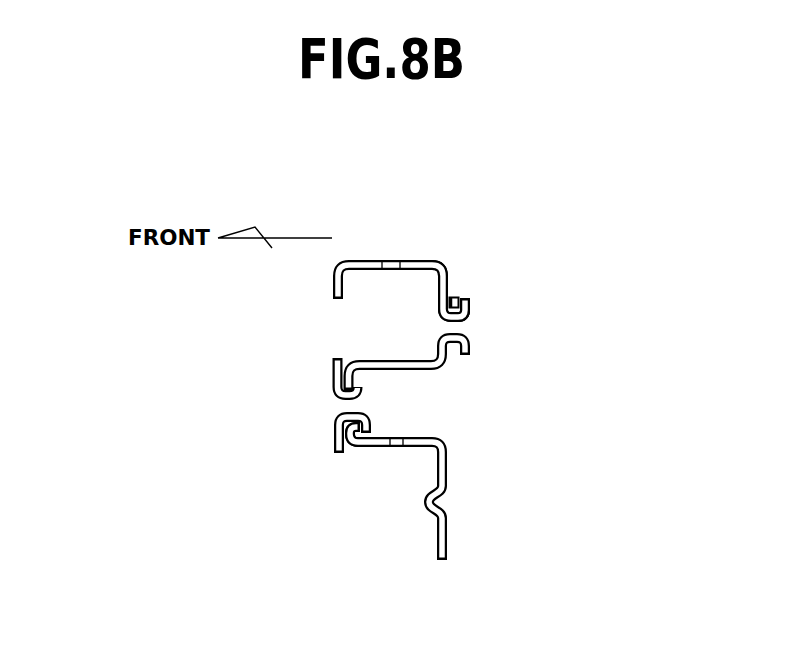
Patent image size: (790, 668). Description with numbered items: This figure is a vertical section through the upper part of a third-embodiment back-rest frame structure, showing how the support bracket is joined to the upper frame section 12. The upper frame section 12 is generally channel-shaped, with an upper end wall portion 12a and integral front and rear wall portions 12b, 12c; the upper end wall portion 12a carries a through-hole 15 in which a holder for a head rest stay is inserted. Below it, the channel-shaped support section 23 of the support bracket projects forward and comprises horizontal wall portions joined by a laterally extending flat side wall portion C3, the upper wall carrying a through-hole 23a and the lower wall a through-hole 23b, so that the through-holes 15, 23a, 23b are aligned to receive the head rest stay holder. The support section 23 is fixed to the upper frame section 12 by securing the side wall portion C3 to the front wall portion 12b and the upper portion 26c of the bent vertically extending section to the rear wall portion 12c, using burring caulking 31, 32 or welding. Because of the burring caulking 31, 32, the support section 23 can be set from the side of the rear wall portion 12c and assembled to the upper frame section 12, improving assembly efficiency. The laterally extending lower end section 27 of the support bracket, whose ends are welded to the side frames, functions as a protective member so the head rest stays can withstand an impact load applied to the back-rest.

The upper frame section 12 is at (343, 260).
The upper end wall portion 12a is at (368, 258).
The through-hole 15 is at (393, 258).
The front wall portion 12b is at (334, 381).
The rear wall portion 12c is at (449, 262).
The upper portion of vertically extending section 26c is at (463, 294).
The burring caulking 31 is at (470, 315).
The support section 23 is at (440, 375).
The through-hole 23a is at (402, 370).
The side wall portion C3 is at (392, 370).
The burring caulking 32 is at (370, 453).
The through-hole 23b is at (390, 450).
The lower end section 27 is at (447, 542).